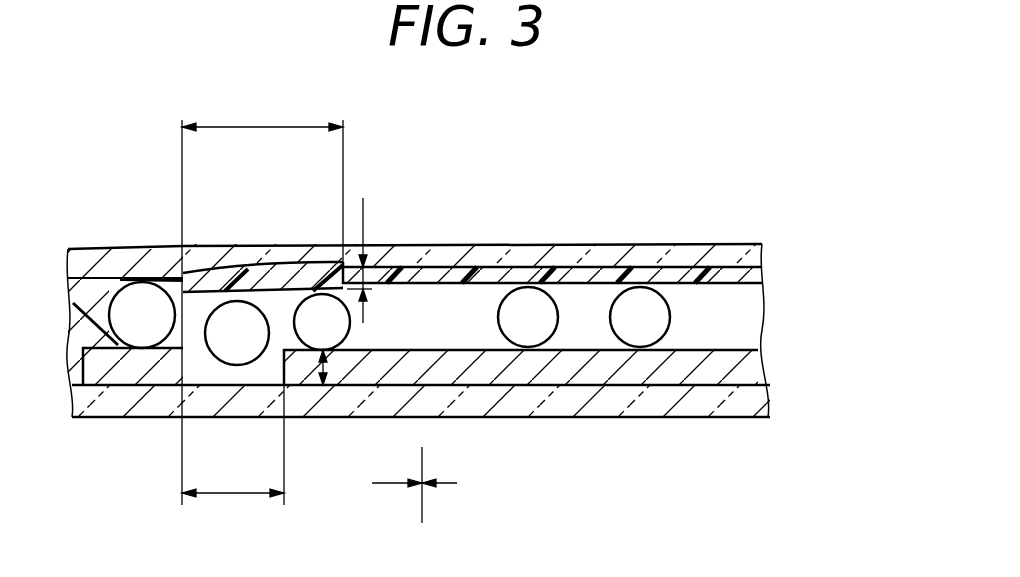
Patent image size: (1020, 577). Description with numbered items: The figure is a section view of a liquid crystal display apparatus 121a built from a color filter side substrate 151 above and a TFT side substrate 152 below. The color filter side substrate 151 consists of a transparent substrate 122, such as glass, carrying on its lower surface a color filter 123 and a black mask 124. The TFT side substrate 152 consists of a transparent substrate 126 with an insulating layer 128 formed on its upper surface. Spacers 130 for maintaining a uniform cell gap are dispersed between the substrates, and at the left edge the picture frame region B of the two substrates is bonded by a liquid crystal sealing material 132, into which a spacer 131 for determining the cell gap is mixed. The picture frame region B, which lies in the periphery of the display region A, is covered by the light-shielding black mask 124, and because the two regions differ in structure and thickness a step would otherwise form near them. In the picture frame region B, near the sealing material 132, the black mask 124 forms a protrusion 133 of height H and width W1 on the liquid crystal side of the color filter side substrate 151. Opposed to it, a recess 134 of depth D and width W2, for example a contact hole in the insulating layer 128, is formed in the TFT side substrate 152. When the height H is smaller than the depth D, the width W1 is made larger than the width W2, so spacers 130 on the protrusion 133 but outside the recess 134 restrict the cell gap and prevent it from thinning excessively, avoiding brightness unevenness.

The liquid crystal display apparatus 121a is at (725, 172).
The transparent substrate 122 is at (740, 253).
The color filter 123 is at (603, 277).
The black mask 124 is at (318, 270).
The transparent substrate 126 is at (745, 403).
The insulating layer 128 is at (733, 364).
The spacers 130 is at (260, 313).
The spacer 131 is at (147, 303).
The liquid crystal sealing material 132 is at (90, 303).
The protrusion 133 is at (230, 282).
The recess 134 is at (278, 362).
The color filter side substrate 151 is at (829, 237).
The TFT side substrate 152 is at (829, 340).
The width of the protrusion W1 is at (254, 126).
The width of the recess W2 is at (232, 494).
The height of the protrusion H is at (365, 223).
The depth of the recess D is at (328, 368).
The display region A is at (447, 486).
The picture frame region B is at (390, 486).